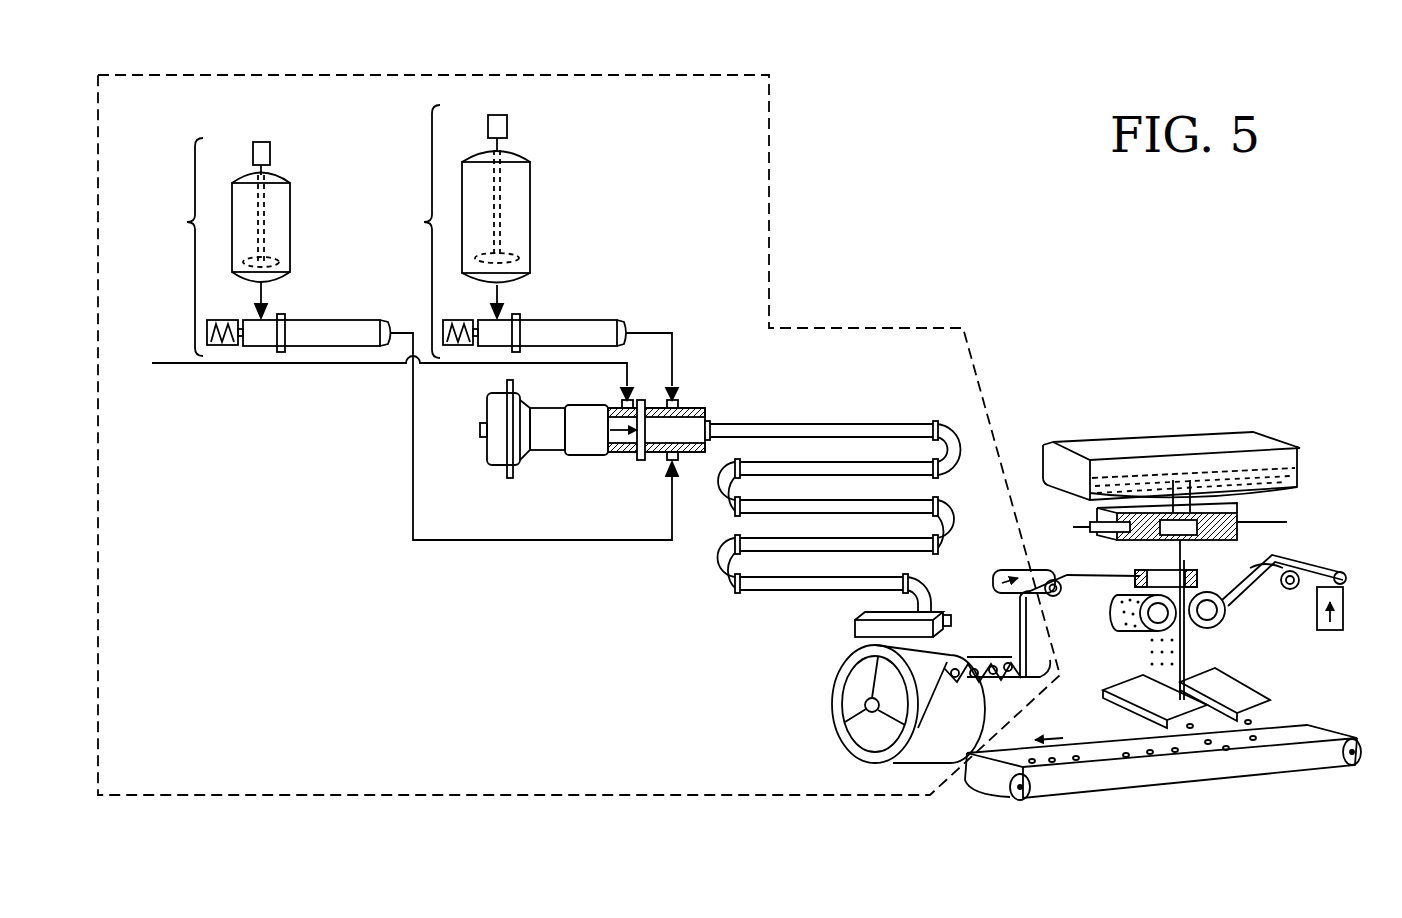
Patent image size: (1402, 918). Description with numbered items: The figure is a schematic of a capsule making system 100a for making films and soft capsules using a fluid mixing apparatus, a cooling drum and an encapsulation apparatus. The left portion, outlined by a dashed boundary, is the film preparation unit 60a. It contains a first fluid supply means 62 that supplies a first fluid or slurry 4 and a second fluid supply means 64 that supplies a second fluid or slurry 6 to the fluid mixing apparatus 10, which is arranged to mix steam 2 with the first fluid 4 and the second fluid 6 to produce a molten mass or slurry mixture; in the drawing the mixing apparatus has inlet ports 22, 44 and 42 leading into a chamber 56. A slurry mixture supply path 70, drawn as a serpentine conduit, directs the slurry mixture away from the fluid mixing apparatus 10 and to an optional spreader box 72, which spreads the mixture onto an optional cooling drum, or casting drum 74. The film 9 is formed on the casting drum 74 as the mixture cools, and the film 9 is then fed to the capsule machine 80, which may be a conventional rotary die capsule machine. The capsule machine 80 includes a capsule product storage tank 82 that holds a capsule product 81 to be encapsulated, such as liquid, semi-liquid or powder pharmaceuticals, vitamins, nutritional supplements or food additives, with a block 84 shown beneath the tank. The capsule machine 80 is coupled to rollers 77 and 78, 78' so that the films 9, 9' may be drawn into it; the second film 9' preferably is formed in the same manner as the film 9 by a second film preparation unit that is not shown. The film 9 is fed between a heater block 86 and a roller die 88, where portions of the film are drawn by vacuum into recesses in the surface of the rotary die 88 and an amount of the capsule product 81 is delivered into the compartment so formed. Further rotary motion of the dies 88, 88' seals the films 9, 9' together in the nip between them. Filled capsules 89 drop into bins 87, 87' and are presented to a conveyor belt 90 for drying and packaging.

The capsule making system 100a is at (866, 193).
The film preparation unit 60a is at (500, 73).
The first fluid supply means 62 is at (219, 247).
The second fluid supply means 64 is at (457, 231).
The steam 2 is at (293, 368).
The first fluid or slurry 4 is at (264, 288).
The second fluid or slurry 6 is at (499, 288).
The fluid mixing apparatus 10 is at (563, 484).
The first inlet port 22 is at (620, 400).
The second inlet port 44 is at (680, 405).
The third inlet port 42 is at (665, 461).
The mixing chamber 56 is at (710, 419).
The slurry mixture supply path 70 is at (843, 425).
The spreader box 72 is at (853, 622).
The casting drum 74 is at (838, 718).
The roller 77 is at (993, 657).
The film 9 is at (1015, 569).
The film 9' is at (1299, 551).
The roller 78 is at (1051, 557).
The roller 78' is at (1313, 618).
The capsule machine 80 is at (1041, 430).
The capsule product 81 is at (1188, 480).
The capsule product storage tank 82 is at (1265, 436).
The die block 84 is at (1240, 517).
The heater block 86 is at (1135, 572).
The roller die 88 is at (1114, 620).
The rotary die 88' is at (1235, 620).
The capsules 89 is at (1147, 657).
The bin 87 is at (1130, 704).
The bin 87' is at (1237, 691).
The conveyor belt 90 is at (1195, 783).